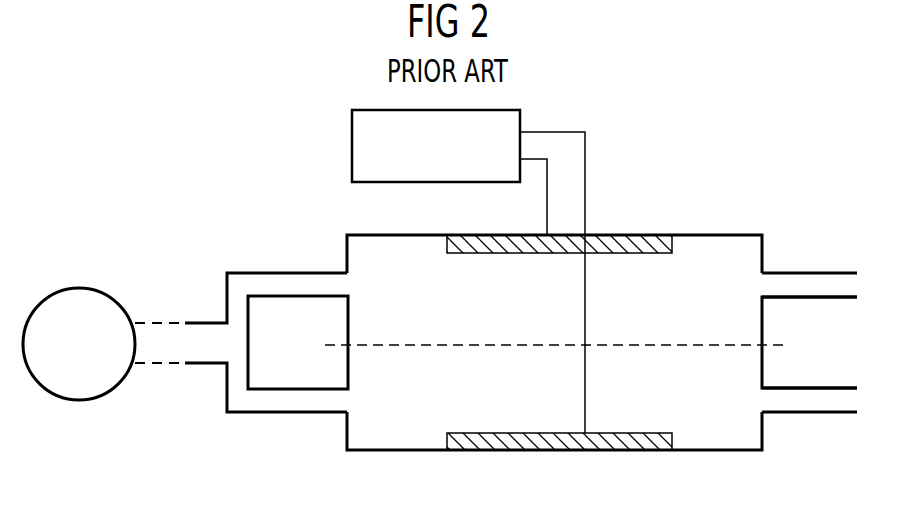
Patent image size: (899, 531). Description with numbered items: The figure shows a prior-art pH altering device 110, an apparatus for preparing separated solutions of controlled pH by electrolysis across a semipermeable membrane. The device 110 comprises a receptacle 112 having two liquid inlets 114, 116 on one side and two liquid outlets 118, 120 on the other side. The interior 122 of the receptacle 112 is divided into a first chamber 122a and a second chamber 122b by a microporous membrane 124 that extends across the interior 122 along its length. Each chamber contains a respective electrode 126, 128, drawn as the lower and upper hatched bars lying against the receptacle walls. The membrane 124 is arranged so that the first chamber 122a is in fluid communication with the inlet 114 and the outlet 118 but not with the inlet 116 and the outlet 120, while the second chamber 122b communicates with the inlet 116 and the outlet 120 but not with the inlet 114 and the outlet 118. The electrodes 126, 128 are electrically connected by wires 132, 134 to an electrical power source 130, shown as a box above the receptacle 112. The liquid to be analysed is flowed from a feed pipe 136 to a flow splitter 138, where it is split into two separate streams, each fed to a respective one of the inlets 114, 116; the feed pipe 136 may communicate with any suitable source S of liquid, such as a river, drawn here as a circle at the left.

The pH altering device 110 is at (757, 216).
The receptacle 112 is at (711, 451).
The liquid inlet 114 is at (346, 412).
The liquid inlet 116 is at (346, 273).
The liquid outlet 118 is at (769, 412).
The liquid outlet 120 is at (771, 273).
The interior 122 is at (396, 411).
The first chamber 122a is at (435, 387).
The second chamber 122b is at (435, 311).
The microporous membrane 124 is at (657, 344).
The electrode 126 is at (655, 433).
The electrode 128 is at (552, 254).
The electrical power source 130 is at (352, 148).
The wire 132 is at (546, 209).
The wire 134 is at (586, 162).
The pipe 136 is at (199, 322).
The flow splitter 138 is at (227, 347).
The sample source S is at (80, 288).